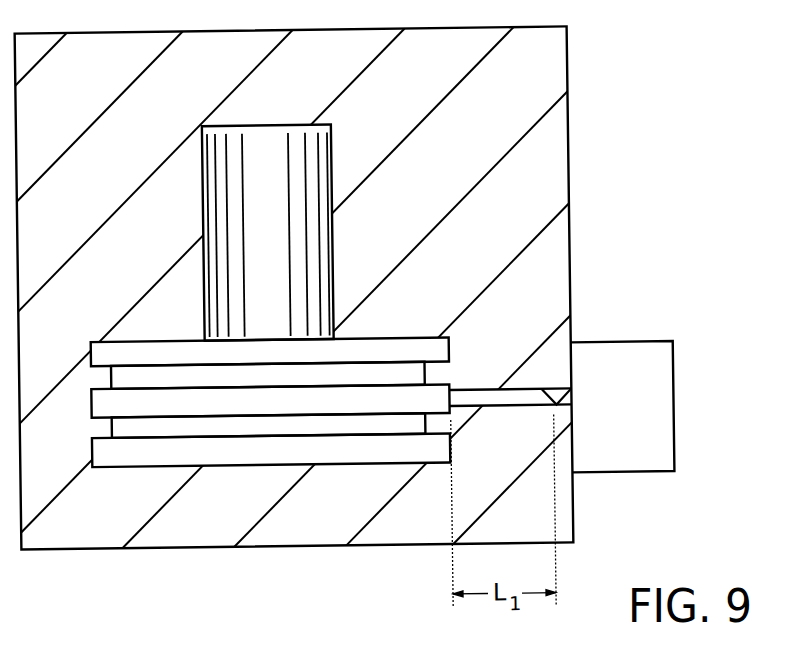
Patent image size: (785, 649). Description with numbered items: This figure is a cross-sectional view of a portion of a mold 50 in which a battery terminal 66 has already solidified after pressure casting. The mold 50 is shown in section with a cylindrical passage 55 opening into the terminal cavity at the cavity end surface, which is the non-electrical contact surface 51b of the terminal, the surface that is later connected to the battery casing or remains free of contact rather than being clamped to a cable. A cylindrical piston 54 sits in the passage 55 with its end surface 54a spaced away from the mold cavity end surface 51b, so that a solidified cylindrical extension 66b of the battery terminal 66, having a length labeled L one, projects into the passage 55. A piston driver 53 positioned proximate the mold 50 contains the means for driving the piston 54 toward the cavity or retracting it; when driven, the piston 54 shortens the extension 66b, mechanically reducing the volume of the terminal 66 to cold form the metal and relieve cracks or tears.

The mold 50 is at (570, 82).
The battery terminal 66 is at (268, 143).
The piston driver 53 is at (664, 347).
The end surface of piston 54a is at (551, 400).
The non-electrical contact surface 51b is at (454, 387).
The piston 54 is at (557, 391).
The passage 55 is at (536, 410).
The extension 66b is at (508, 401).